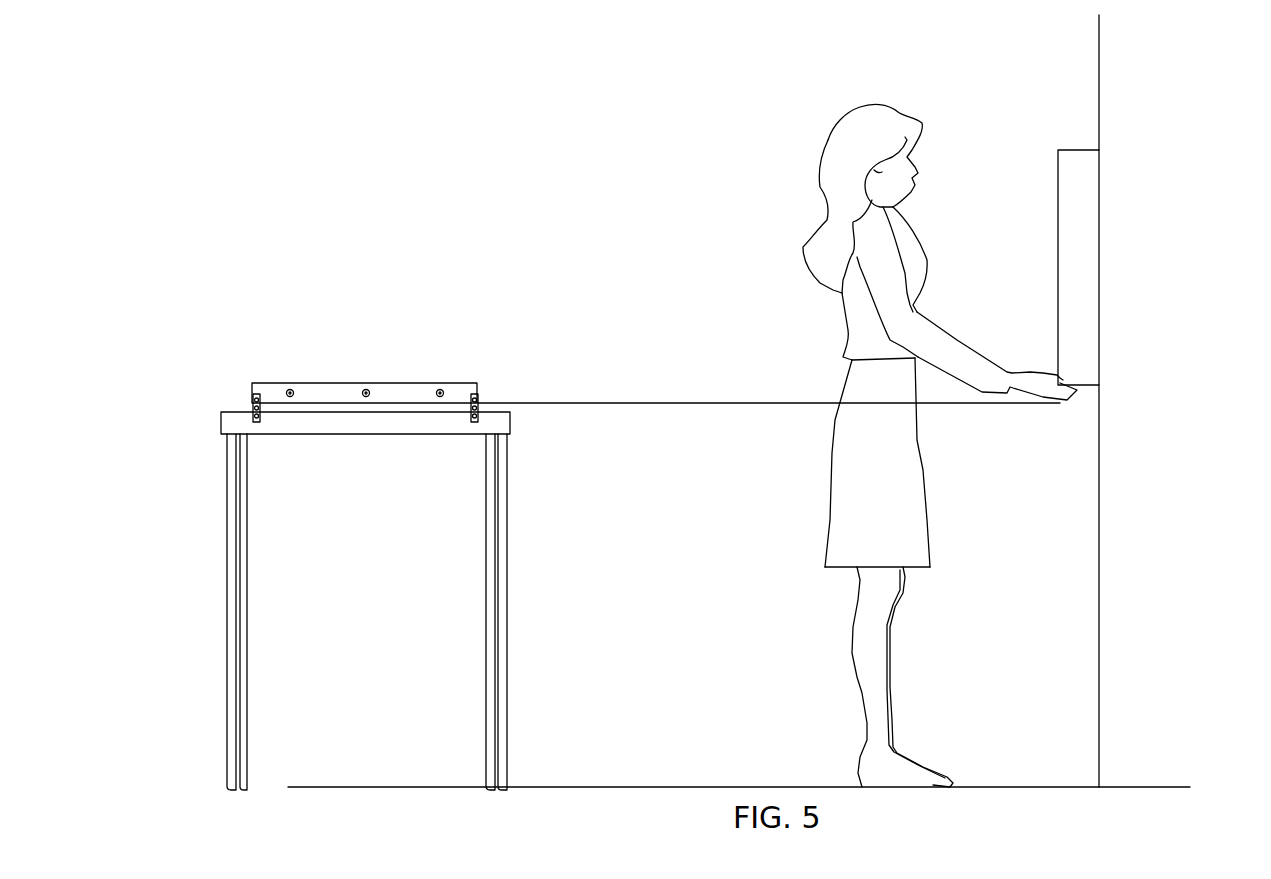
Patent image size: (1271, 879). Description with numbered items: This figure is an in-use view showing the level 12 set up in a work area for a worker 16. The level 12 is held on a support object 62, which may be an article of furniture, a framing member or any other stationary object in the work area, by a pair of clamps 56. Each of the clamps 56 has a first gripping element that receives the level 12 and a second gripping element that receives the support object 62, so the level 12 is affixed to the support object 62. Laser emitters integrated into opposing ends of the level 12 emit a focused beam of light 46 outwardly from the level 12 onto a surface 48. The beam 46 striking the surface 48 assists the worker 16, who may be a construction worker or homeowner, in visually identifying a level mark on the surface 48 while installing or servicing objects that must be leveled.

The level 12 is at (428, 390).
The worker 16 is at (824, 141).
The focused beam of light 46 is at (607, 401).
The surface 48 is at (1098, 502).
The clamps 56 is at (258, 415).
The support object 62 is at (230, 419).